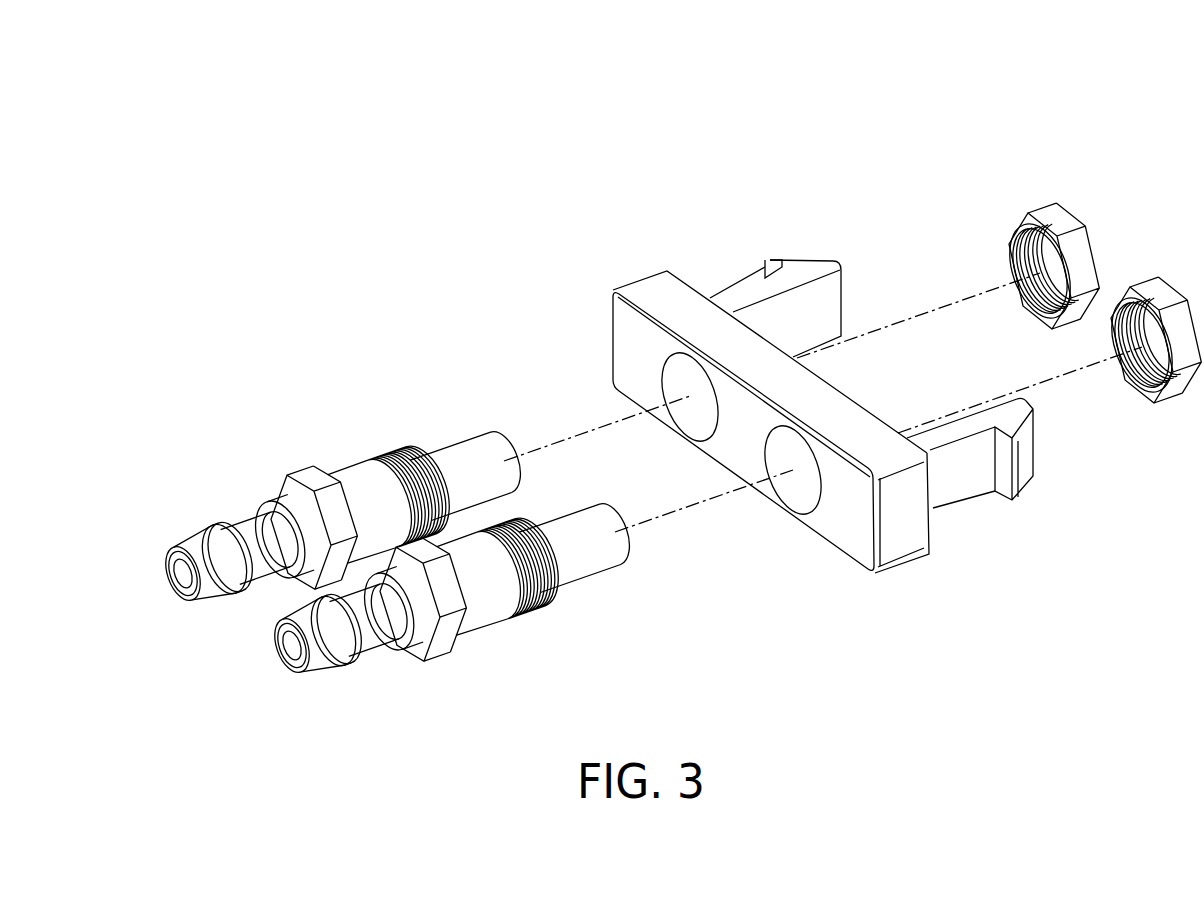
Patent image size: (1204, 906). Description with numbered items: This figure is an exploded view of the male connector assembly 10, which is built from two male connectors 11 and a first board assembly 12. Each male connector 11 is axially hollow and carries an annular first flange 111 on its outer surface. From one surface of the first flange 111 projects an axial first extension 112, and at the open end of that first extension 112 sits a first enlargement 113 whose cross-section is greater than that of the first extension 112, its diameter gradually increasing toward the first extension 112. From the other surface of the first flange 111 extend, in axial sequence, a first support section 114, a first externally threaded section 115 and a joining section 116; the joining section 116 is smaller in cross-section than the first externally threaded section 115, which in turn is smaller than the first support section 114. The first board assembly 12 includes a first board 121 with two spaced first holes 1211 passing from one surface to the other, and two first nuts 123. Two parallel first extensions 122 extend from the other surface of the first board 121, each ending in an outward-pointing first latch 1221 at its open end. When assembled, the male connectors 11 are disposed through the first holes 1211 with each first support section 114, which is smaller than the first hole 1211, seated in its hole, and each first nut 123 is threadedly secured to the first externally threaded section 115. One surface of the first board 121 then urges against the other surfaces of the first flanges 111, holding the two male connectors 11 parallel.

The male connector assembly 10 is at (340, 70).
The male connector 11 is at (440, 293).
The first flange 111 is at (303, 477).
The first extension 112 is at (252, 537).
The first enlargement 113 is at (210, 543).
The first support section 114 is at (360, 487).
The first externally threaded section 115 is at (403, 470).
The joining section 116 is at (473, 467).
The first board assembly 12 is at (975, 57).
The first board 121 is at (660, 292).
The first hole 1211 is at (686, 375).
The first extension 122 is at (750, 293).
The first latch 1221 is at (805, 275).
The first nut 123 is at (1053, 220).